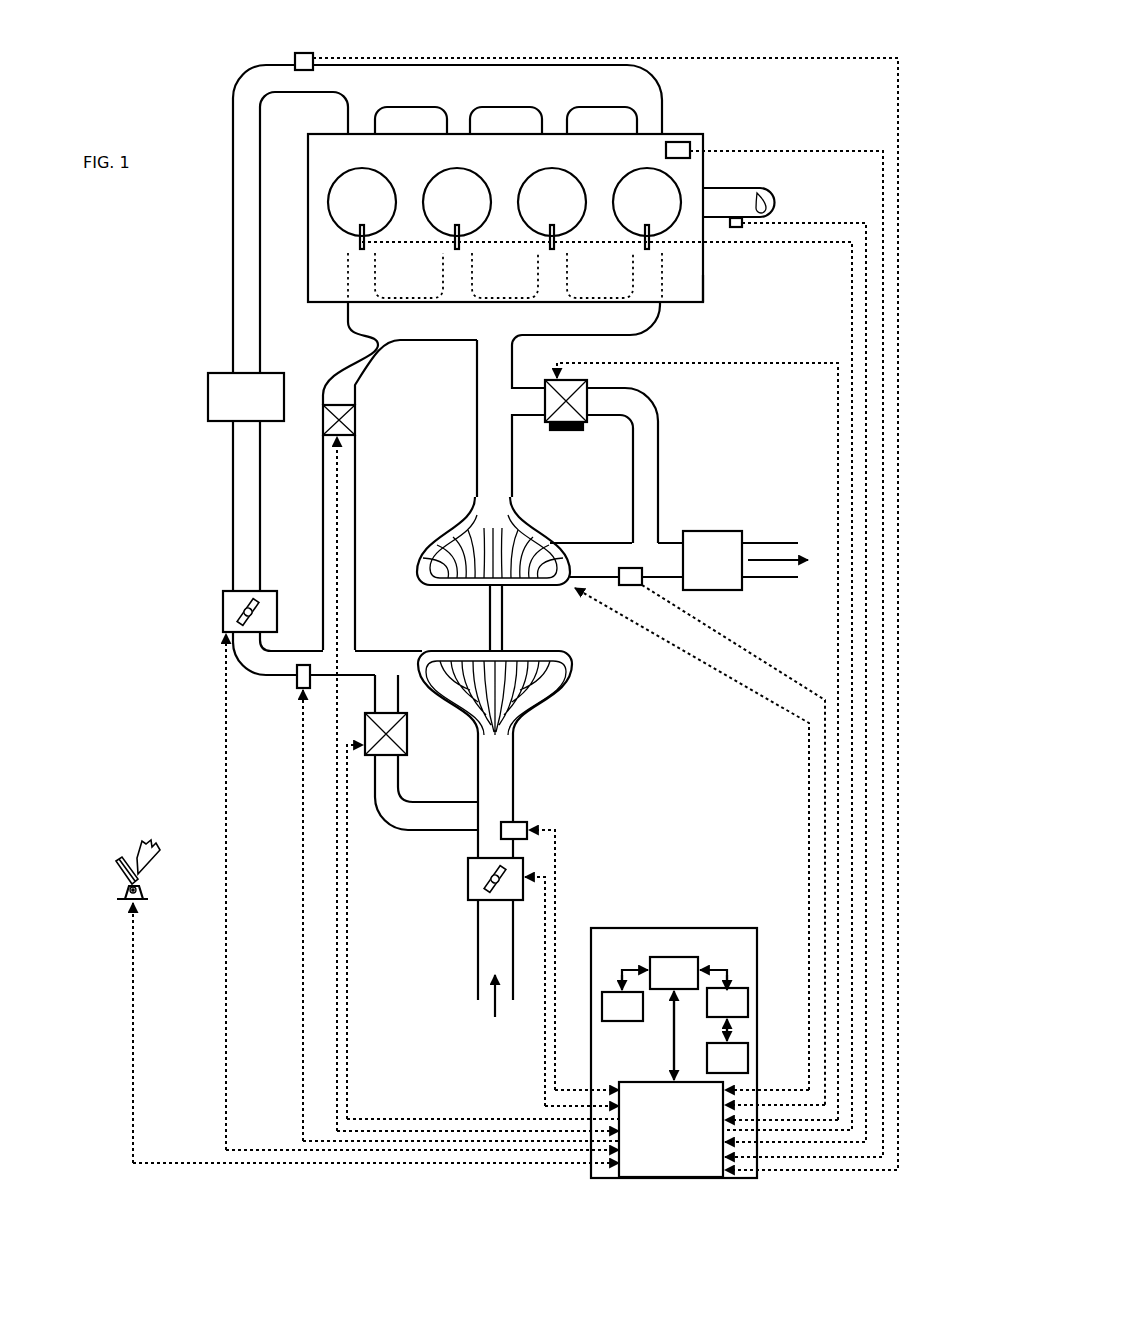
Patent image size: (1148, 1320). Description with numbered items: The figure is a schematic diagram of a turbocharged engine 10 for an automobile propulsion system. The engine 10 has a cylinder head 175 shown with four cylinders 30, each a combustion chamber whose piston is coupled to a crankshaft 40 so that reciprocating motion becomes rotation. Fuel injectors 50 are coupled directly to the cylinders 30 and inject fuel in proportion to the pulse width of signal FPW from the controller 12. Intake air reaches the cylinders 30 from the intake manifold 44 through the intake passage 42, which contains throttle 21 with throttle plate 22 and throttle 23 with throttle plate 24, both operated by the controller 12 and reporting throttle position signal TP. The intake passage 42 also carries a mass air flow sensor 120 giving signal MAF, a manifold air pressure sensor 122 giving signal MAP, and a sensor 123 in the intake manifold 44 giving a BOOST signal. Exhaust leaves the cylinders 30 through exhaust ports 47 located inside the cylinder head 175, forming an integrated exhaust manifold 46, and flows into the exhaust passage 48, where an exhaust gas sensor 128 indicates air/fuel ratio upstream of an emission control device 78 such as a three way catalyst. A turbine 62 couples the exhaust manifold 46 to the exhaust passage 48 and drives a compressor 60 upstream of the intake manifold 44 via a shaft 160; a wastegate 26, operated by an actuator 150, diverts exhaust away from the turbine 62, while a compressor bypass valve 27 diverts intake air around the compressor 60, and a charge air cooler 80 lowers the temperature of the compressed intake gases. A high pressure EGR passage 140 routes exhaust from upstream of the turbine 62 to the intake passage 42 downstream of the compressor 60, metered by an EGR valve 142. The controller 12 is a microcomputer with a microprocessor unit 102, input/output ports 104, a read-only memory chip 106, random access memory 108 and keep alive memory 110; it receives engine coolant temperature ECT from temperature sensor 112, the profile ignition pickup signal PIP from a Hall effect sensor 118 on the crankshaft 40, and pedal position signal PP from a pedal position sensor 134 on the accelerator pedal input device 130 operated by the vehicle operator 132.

The engine 10 is at (582, 161).
The controller 12 is at (615, 1057).
The throttle 21 is at (468, 891).
The throttle plate 22 is at (481, 876).
The throttle 23 is at (223, 594).
The throttle plate 24 is at (240, 618).
The wastegate 26 is at (587, 383).
The compressor bypass valve 27 is at (407, 736).
The cylinder 30 is at (352, 211).
The crankshaft 40 is at (740, 188).
The intake passage 42 is at (485, 950).
The intake manifold 44 is at (375, 93).
The exhaust manifold 46 is at (656, 313).
The exhaust port 47 is at (505, 276).
The exhaust passage 48 is at (585, 570).
The fuel injector 50 is at (360, 245).
The compressor 60 is at (565, 673).
The turbine 62 is at (550, 536).
The emission control device 78 is at (702, 570).
The charge air cooler 80 is at (211, 373).
The microprocessor unit 102 is at (650, 964).
The input/output ports 104 is at (688, 1153).
The read-only memory chip 106 is at (602, 1012).
The random access memory 108 is at (748, 996).
The keep alive memory 110 is at (748, 1046).
The temperature sensor 112 is at (676, 142).
The Hall effect sensor 118 is at (737, 227).
The mass air flow sensor 120 is at (527, 824).
The manifold air pressure sensor 122 is at (295, 58).
The sensor 123 is at (300, 688).
The exhaust gas sensor 128 is at (630, 585).
The input device 130 is at (118, 868).
The vehicle operator 132 is at (152, 848).
The pedal position sensor 134 is at (141, 888).
The EGR passage 140 is at (355, 492).
The EGR valve 142 is at (355, 418).
The actuator 150 is at (583, 429).
The shaft 160 is at (503, 614).
The cylinder head 175 is at (704, 290).